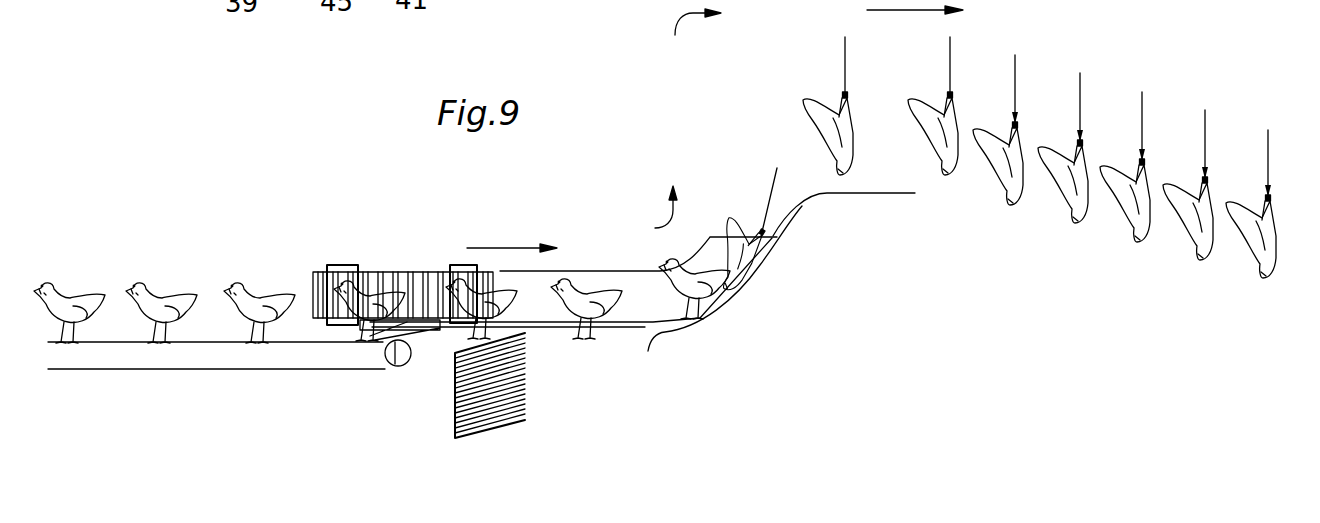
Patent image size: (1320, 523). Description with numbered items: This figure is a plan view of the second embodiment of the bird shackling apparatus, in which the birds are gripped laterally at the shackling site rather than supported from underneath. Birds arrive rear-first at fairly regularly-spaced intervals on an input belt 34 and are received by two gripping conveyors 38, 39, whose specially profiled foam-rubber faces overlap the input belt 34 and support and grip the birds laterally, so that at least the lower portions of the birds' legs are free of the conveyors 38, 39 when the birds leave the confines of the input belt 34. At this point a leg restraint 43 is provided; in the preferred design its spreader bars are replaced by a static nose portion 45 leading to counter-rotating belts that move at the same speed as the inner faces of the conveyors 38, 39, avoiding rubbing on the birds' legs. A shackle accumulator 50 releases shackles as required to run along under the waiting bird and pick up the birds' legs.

The input belt 34 is at (207, 342).
The static nose portion 45 is at (395, 367).
The gripping conveyor 38 is at (407, 272).
The gripping conveyor 39 is at (346, 272).
The leg restraint 43 is at (513, 337).
The shackle accumulator 50 is at (522, 378).